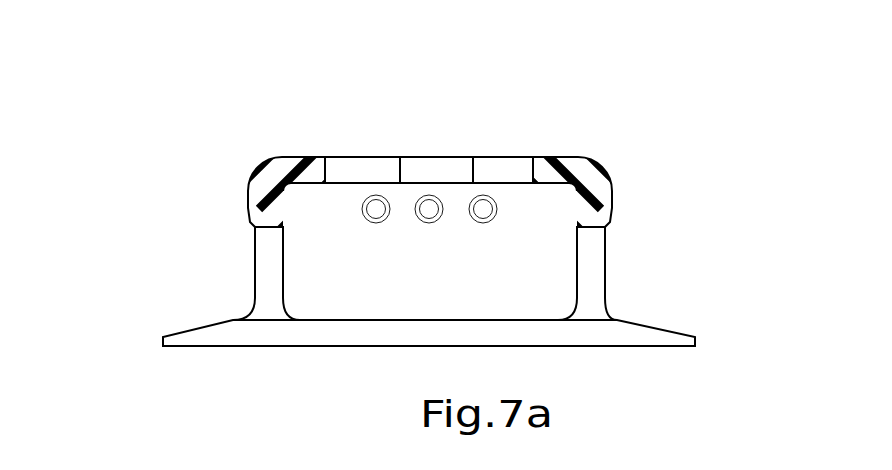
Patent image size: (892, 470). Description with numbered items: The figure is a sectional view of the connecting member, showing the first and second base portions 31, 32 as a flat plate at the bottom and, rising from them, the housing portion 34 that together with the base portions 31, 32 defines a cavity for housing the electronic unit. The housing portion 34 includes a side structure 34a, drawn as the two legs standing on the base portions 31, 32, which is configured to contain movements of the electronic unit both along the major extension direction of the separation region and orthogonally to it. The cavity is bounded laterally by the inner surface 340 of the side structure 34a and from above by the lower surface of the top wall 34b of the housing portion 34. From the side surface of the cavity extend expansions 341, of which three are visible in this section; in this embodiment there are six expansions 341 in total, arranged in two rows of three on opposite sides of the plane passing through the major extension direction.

The housing portion 34 is at (207, 288).
The side structure 34a is at (254, 251).
The top wall 34b is at (520, 157).
The inner surface of the side structure 340 is at (512, 280).
The expansions 341 is at (376, 205).
The first base portion 31 is at (429, 377).
The second base portion 32 is at (344, 347).